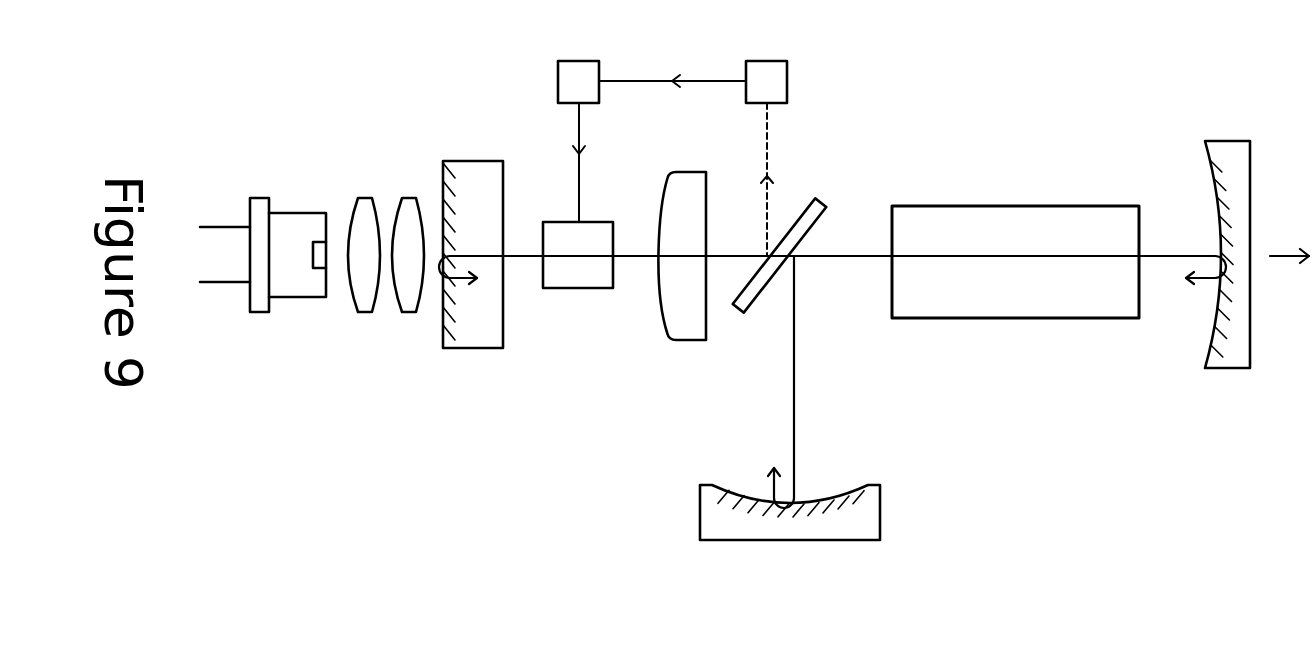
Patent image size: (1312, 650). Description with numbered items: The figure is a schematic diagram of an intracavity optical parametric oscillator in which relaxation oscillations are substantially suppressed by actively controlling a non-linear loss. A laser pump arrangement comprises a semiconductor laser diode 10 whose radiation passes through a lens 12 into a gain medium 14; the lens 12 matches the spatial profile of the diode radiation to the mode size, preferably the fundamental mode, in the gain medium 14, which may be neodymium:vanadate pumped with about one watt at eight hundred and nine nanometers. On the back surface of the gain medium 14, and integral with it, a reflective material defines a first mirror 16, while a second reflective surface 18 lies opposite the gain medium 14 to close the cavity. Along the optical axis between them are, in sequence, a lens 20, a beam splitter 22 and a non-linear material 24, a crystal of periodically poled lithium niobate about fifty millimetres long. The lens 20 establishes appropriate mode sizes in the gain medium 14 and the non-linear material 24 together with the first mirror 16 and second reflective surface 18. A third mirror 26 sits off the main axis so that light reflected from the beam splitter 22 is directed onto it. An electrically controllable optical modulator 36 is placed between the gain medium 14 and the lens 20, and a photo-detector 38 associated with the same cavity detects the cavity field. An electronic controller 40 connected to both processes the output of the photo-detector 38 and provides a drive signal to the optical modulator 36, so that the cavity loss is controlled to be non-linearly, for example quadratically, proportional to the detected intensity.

The semiconductor laser diode 10 is at (263, 278).
The lens 12 is at (386, 278).
The gain medium 14 is at (420, 232).
The first mirror 16 is at (423, 168).
The second reflective surface 18 is at (1227, 279).
The lens 20 is at (683, 231).
The beam splitter 22 is at (781, 233).
The non-linear material 24 is at (1015, 239).
The third mirror 26 is at (815, 512).
The optical modulator 36 is at (578, 278).
The photo-detector 38 is at (693, 135).
The electronic controller 40 is at (578, 118).